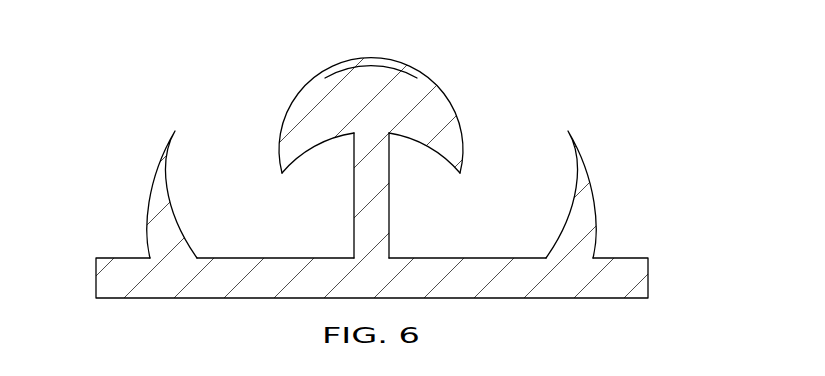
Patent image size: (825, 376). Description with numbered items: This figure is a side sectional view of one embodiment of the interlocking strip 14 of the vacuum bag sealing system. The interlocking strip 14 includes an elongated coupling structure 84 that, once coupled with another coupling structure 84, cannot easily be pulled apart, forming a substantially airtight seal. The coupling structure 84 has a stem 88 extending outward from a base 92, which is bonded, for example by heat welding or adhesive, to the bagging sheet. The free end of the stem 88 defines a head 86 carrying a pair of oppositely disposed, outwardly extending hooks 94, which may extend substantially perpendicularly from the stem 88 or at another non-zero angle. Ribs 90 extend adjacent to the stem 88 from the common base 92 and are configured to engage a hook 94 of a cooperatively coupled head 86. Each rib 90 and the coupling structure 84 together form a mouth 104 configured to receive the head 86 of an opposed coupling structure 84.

The interlocking strip 14 is at (412, 188).
The coupling structure 84 is at (308, 65).
The head 86 is at (424, 72).
The stem 88 is at (390, 216).
The rib 90 is at (144, 217).
The base 92 is at (648, 272).
The hook 94 is at (281, 128).
The mouth 104 is at (205, 150).